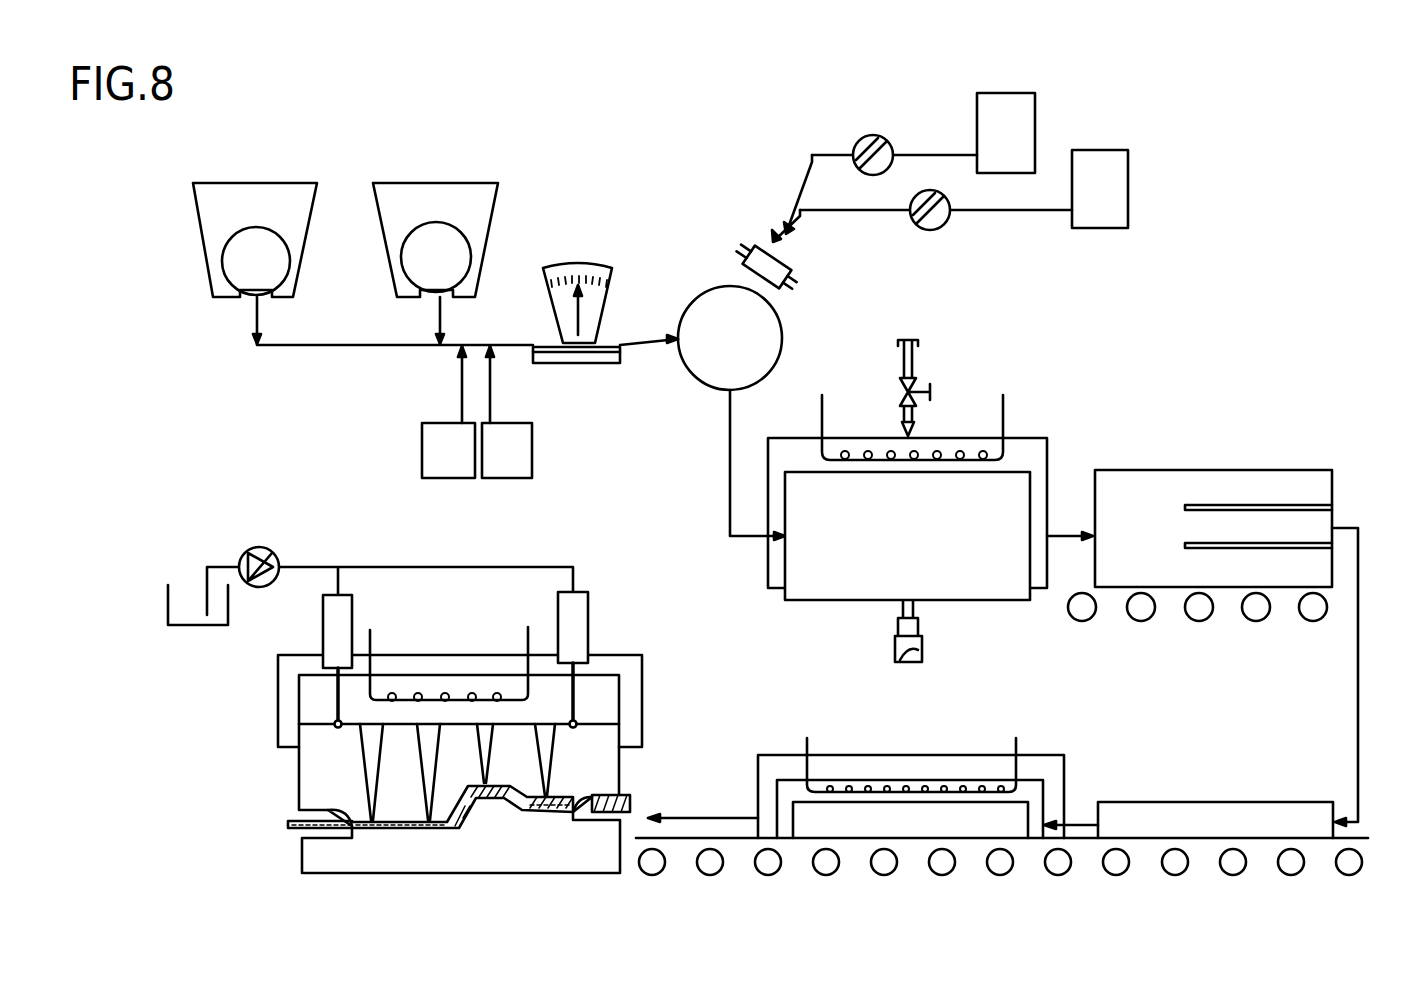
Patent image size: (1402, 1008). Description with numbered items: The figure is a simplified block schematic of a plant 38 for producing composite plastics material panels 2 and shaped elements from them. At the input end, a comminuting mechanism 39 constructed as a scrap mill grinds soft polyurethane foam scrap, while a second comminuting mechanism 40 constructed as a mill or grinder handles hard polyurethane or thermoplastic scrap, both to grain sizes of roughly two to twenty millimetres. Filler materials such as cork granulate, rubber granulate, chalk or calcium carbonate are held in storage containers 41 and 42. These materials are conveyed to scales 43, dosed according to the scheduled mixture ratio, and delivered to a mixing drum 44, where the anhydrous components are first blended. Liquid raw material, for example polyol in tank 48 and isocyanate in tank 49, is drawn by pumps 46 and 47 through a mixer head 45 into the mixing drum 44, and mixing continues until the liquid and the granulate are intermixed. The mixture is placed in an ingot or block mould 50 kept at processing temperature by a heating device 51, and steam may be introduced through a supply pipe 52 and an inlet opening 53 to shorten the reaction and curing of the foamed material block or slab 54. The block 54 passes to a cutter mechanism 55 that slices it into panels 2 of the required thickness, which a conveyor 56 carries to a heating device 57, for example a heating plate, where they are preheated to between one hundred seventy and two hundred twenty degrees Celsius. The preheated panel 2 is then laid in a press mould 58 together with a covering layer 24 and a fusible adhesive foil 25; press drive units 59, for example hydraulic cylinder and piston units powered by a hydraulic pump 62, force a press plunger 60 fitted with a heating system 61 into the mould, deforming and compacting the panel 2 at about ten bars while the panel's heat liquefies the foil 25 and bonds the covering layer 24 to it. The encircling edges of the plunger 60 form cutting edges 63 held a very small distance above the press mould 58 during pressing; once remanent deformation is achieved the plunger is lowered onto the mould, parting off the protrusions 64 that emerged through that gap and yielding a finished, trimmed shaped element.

The composite plastics material panel 2 is at (915, 826).
The covering layer 24 is at (522, 810).
The fusible adhesive foil 25 is at (487, 812).
The plant 38 is at (1235, 172).
The comminuting mechanism 39 is at (213, 218).
The comminuting mechanism 40 is at (402, 207).
The storage container 41 is at (432, 453).
The storage container 42 is at (518, 452).
The scales 43 is at (597, 268).
The mixing drum 44 is at (700, 293).
The mixer head 45 is at (765, 276).
The pump 46 is at (860, 146).
The pump 47 is at (932, 217).
The tank 48 is at (1027, 130).
The tank 49 is at (1128, 183).
The ingot or block mould 50 is at (1037, 480).
The heating device 51 is at (1004, 408).
The supply pipe 52 is at (922, 365).
The inlet opening 53 is at (905, 430).
The foamed material block or slab 54 is at (1012, 517).
The cutter mechanism 55 is at (1225, 432).
The conveyor 56 is at (1113, 872).
The heating device 57 is at (975, 725).
The press mould 58 is at (257, 722).
The press drive unit 59 is at (345, 622).
The press plunger 60 is at (315, 770).
The heating system 61 is at (524, 638).
The hydraulic pump 62 is at (258, 548).
The cutting edge 63 is at (348, 815).
The protrusion 64 is at (295, 824).